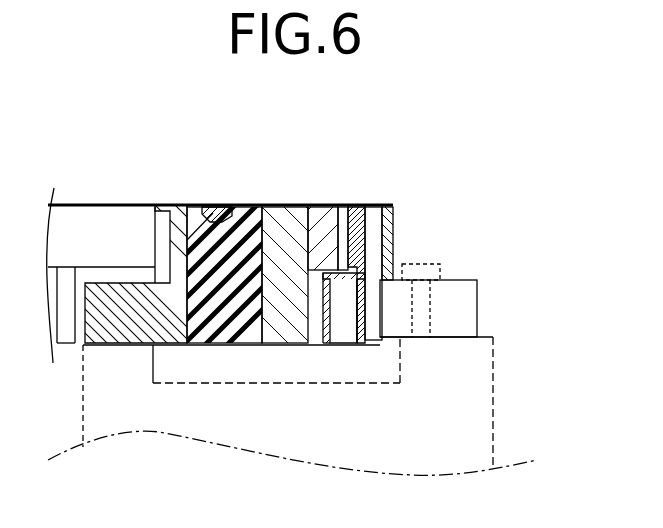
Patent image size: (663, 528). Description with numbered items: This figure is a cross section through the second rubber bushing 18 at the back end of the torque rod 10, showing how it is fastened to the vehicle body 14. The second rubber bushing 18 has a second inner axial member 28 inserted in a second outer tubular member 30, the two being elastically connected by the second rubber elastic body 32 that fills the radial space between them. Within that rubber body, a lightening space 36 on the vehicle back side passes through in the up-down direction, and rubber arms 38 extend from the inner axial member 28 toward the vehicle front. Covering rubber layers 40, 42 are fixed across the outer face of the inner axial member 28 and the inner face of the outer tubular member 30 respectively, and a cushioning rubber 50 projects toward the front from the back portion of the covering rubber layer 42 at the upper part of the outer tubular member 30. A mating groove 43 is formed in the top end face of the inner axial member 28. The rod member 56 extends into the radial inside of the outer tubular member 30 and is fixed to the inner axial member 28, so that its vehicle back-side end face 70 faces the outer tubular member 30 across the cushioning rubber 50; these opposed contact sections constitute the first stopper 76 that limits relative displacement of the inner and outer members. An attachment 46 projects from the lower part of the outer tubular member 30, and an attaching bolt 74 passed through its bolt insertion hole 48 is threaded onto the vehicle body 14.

The torque rod 10 is at (443, 136).
The vehicle body 14 is at (494, 420).
The second rubber bushing 18 is at (413, 188).
The second inner axial member 28 is at (300, 222).
The second outer tubular member 30 is at (402, 244).
The second rubber elastic body 32 is at (208, 207).
The lightening space 36 is at (358, 322).
The rubber arm 38 is at (240, 320).
The covering rubber layer 40 is at (325, 305).
The covering rubber layer 42 is at (190, 205).
The mating groove 43 is at (323, 230).
The attachment 46 is at (122, 343).
The bolt insertion hole 48 is at (432, 327).
The cushioning rubber 50 is at (356, 238).
The rod member 56 is at (110, 198).
The vehicle back-side end face 70 is at (348, 218).
The attaching bolt 74 is at (432, 270).
The first stopper 76 is at (365, 194).